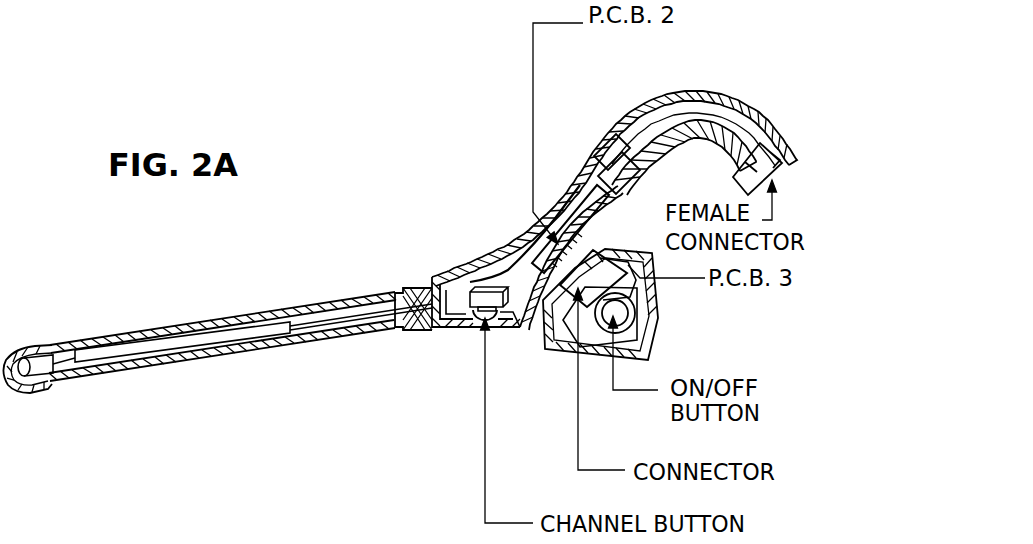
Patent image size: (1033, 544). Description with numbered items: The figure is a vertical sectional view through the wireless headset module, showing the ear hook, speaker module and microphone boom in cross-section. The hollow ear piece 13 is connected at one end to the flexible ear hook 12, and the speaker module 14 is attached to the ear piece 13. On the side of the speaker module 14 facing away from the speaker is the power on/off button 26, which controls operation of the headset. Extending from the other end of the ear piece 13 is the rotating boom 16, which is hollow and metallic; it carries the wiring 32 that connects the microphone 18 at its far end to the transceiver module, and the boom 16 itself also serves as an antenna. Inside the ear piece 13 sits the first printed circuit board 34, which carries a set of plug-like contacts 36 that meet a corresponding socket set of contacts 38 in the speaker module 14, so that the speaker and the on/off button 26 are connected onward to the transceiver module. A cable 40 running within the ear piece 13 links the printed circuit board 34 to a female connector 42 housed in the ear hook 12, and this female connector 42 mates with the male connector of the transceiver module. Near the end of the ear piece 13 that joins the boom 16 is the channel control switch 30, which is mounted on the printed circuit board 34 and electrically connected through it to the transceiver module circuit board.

The ear hook 12 is at (641, 98).
The ear piece 13 is at (515, 266).
The speaker module 14 is at (664, 330).
The boom 16 is at (187, 322).
The microphone 18 is at (31, 344).
The power on/off button 26 is at (634, 305).
The channel control switch 30 is at (470, 323).
The wiring 32 is at (100, 356).
The first printed circuit board 34 is at (490, 252).
The plug-like contacts 36 is at (505, 323).
The socket set of contacts 38 is at (552, 338).
The cable 40 is at (690, 117).
The female connector 42 is at (781, 172).